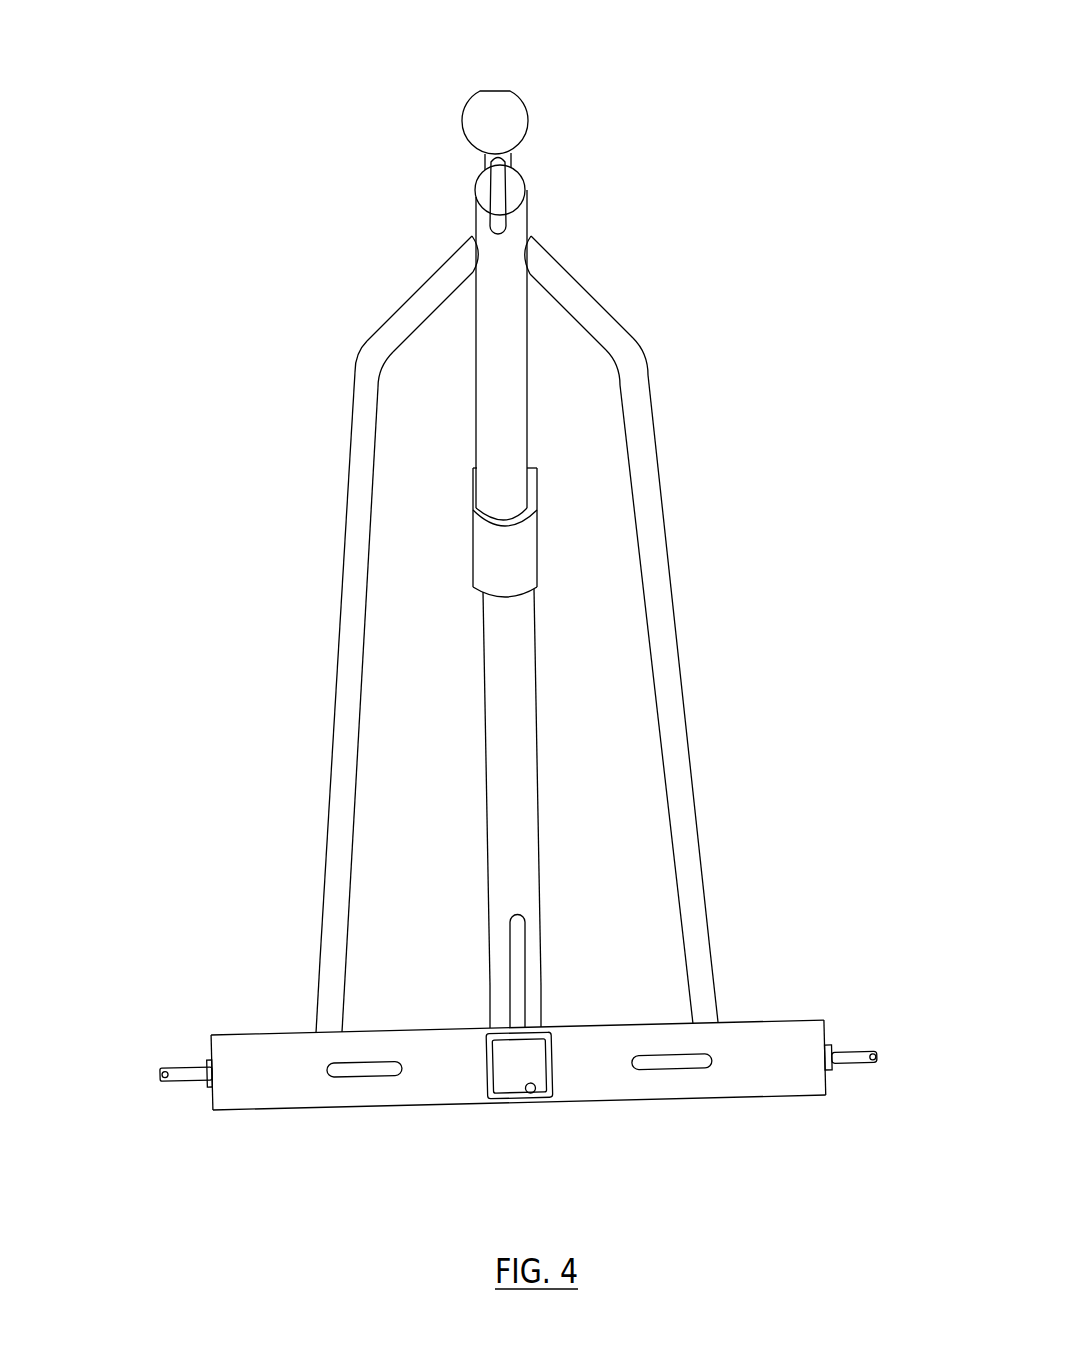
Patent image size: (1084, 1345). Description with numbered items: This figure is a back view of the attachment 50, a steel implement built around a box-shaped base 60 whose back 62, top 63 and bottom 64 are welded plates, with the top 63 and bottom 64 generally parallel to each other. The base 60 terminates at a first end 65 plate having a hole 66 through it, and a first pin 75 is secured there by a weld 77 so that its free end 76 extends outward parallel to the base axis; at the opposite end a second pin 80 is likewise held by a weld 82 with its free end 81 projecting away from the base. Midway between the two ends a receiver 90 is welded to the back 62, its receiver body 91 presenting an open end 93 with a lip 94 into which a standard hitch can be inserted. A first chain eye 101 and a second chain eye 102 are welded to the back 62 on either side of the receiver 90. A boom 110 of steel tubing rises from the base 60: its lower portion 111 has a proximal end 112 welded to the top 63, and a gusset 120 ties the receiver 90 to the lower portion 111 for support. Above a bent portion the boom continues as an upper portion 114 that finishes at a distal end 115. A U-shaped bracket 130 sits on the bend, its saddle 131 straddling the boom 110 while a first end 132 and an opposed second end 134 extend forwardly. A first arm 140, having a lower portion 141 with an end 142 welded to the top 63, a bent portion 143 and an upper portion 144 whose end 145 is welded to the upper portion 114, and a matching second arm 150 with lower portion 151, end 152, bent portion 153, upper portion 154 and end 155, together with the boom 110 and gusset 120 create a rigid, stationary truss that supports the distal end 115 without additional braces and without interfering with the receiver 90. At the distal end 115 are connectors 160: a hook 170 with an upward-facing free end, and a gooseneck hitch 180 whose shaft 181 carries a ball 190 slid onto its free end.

The attachment 50 is at (212, 558).
The base 60 is at (217, 1030).
The back 62 is at (223, 1093).
The top 63 is at (248, 1032).
The bottom 64 is at (260, 1110).
The first end 65 is at (210, 1043).
The hole 66 is at (827, 1027).
The first pin 75 is at (160, 1083).
The free end 76 is at (160, 1073).
The weld 77 is at (207, 1087).
The second pin 80 is at (863, 1067).
The free end 81 is at (878, 1057).
The weld 82 is at (832, 1047).
The receiver 90 is at (492, 1103).
The receiver body 91 is at (553, 1074).
The open end 93 is at (527, 1092).
The lip 94 is at (552, 1065).
The first chain eye 101 is at (360, 1077).
The second chain eye 102 is at (670, 1068).
The boom 110 is at (540, 775).
The lower portion 111 is at (487, 785).
The end 112 is at (492, 1027).
The upper portion 114 is at (476, 408).
The end 115 is at (518, 180).
The gusset 120 is at (527, 997).
The U-shaped bracket 130 is at (472, 583).
The saddle 131 is at (513, 558).
The first end 132 is at (472, 498).
The second end 134 is at (538, 490).
The first arm 140 is at (348, 472).
The lower portion 141 is at (332, 724).
The end 142 is at (317, 1030).
The bent portion 143 is at (356, 360).
The upper portion 144 is at (413, 297).
The end 145 is at (472, 233).
The second arm 150 is at (660, 480).
The lower portion 151 is at (675, 605).
The end 152 is at (722, 1020).
The bent portion 153 is at (640, 352).
The upper portion 154 is at (577, 287).
The end 155 is at (523, 233).
The connector 160 is at (524, 91).
The hook 170 is at (507, 170).
The gooseneck hitch 180 is at (473, 91).
The shaft 181 is at (483, 158).
The ball 190 is at (460, 113).